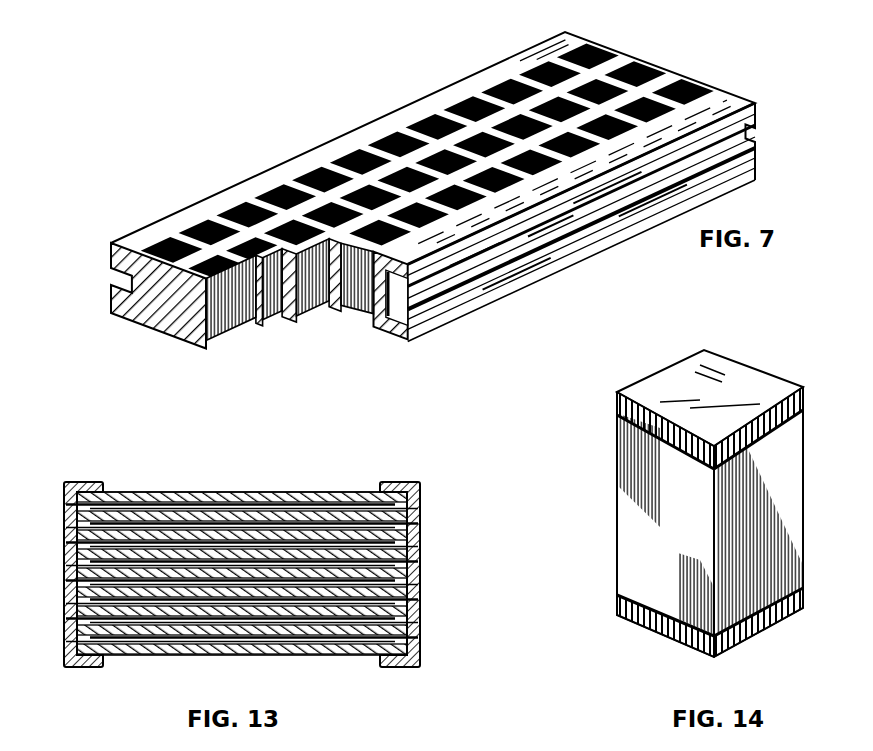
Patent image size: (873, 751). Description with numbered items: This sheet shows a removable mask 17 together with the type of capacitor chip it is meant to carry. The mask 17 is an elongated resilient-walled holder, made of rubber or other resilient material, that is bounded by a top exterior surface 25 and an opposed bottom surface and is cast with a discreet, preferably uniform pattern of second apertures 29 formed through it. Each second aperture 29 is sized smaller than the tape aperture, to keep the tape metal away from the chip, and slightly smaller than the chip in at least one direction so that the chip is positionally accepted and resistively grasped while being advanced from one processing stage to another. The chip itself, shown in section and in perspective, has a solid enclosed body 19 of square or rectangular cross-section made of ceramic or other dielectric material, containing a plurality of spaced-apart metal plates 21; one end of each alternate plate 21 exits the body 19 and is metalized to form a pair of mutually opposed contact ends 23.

In FIG. 7, the mask 17 is at (172, 222).
In FIG. 7, the top exterior surface 25 is at (394, 120).
In FIG. 7, the second apertures 29 is at (350, 190).
In FIG. 13, the body 19 is at (207, 493).
In FIG. 14, the body 19 is at (632, 540).
In FIG. 13, the metal plates 21 is at (368, 567).
In FIG. 13, the contact surfaces or ends 23 is at (64, 587).
In FIG. 14, the contact surfaces or ends 23 is at (678, 373).